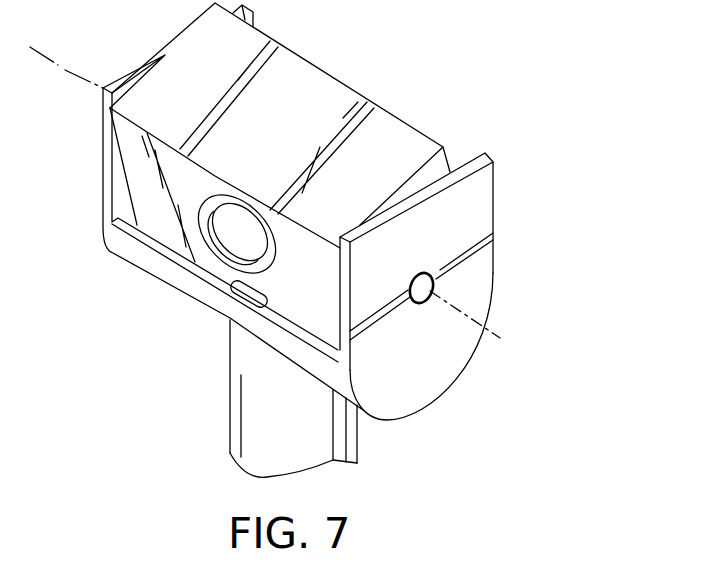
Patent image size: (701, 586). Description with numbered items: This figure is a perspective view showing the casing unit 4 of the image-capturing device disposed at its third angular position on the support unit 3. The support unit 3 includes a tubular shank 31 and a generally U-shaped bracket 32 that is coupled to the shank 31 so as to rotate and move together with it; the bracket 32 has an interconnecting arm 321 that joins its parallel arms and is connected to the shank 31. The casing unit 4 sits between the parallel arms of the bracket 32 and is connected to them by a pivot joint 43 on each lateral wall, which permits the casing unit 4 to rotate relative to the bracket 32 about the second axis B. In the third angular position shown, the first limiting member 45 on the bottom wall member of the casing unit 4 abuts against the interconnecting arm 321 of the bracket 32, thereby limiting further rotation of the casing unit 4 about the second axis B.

The support unit 3 is at (320, 262).
The casing unit 4 is at (342, 97).
The shank 31 is at (253, 415).
The bracket 32 is at (430, 372).
The interconnecting arm 321 is at (170, 275).
The pivot joint 43 is at (434, 283).
The first limiting member 45 is at (243, 292).
The second axis B is at (502, 340).